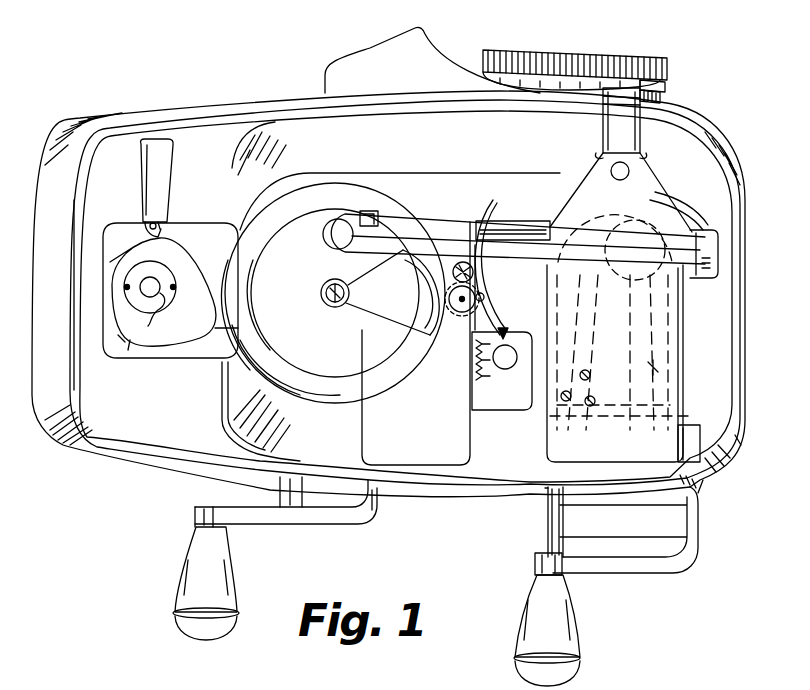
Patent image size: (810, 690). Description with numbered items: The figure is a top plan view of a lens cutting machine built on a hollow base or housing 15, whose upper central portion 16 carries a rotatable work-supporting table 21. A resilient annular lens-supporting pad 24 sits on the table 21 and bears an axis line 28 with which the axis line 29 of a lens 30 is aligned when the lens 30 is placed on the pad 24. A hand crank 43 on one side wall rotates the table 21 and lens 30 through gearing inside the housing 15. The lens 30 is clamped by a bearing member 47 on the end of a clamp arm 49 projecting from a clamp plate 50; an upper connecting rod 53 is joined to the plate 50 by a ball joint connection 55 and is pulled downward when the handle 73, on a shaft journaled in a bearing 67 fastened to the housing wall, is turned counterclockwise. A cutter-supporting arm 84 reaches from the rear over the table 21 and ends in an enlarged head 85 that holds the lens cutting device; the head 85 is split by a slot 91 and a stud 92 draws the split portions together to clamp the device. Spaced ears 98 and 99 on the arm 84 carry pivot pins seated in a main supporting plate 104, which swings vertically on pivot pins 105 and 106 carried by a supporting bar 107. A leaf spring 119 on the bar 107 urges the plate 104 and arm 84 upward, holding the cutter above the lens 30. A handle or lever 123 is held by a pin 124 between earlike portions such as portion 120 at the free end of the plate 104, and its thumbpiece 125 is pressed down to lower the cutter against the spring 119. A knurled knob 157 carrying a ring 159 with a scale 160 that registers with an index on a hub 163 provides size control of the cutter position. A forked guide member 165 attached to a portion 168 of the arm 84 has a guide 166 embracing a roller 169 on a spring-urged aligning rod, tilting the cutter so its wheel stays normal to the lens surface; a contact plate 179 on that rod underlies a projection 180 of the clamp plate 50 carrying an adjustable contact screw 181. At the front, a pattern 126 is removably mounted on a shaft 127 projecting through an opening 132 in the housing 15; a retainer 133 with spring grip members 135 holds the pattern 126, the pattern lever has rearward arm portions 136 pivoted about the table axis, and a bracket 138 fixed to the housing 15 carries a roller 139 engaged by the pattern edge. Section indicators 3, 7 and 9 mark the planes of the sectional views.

The hollow base or housing 15 is at (213, 101).
The thumbpiece 125 is at (372, 56).
The knurled knob 157 is at (613, 53).
The ring 159 is at (660, 82).
The scale 160 is at (662, 92).
The hub 163 is at (662, 101).
The handle or lever 123 is at (612, 118).
The pin 124 is at (630, 170).
The earlike portion 120 is at (645, 182).
The ear 98 is at (712, 232).
The cutter-supporting arm 84 is at (412, 225).
The ear 99 is at (522, 242).
The head 85 is at (340, 220).
The stud 92 is at (368, 212).
The slot 91 is at (378, 222).
The section line 7- 7 is at (305, 243).
The axis line 28 is at (237, 290).
The axis line 29 is at (288, 293).
The lens 30 is at (270, 326).
The lens-supporting pad 24 is at (320, 397).
The bearing member 47 is at (330, 307).
The clamp arm 49 is at (340, 312).
The contact plate 179 is at (428, 282).
The projection 180 is at (449, 298).
The roller 169 is at (485, 276).
The contact screw 181 is at (476, 299).
The guide 166 is at (490, 317).
The guide member 165 is at (476, 228).
The portion of the arm 168 is at (507, 226).
The section line 9- 9 is at (480, 208).
The clamp plate 50 is at (460, 442).
The connecting rod 53 is at (505, 362).
The ball joint connection 55 is at (486, 378).
The main supporting plate 104 is at (677, 307).
The spring 119 is at (612, 298).
The supporting bar 107 is at (655, 367).
The pivot pin 106 is at (537, 442).
The bracket 138 is at (160, 168).
The roller 139 is at (157, 221).
The pattern 126 is at (143, 338).
The shaft 127 is at (163, 305).
The spring grip members 135 is at (152, 252).
The retainer 133 is at (133, 308).
The opening 132 is at (107, 350).
The arm portions 136 is at (218, 330).
The upper central portion 16 is at (240, 377).
The work-supporting table 21 is at (262, 393).
The hand crank 43 is at (325, 531).
The bearing 67 is at (546, 522).
The handle 73 is at (610, 574).
The pivot pin 105 is at (702, 494).
The section line 3- 3 is at (415, 292).